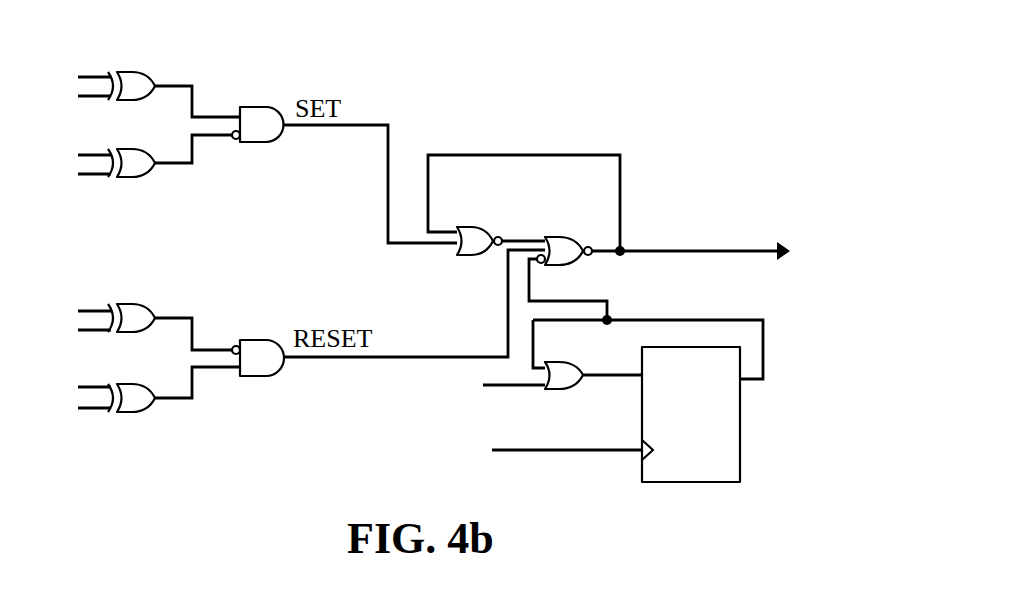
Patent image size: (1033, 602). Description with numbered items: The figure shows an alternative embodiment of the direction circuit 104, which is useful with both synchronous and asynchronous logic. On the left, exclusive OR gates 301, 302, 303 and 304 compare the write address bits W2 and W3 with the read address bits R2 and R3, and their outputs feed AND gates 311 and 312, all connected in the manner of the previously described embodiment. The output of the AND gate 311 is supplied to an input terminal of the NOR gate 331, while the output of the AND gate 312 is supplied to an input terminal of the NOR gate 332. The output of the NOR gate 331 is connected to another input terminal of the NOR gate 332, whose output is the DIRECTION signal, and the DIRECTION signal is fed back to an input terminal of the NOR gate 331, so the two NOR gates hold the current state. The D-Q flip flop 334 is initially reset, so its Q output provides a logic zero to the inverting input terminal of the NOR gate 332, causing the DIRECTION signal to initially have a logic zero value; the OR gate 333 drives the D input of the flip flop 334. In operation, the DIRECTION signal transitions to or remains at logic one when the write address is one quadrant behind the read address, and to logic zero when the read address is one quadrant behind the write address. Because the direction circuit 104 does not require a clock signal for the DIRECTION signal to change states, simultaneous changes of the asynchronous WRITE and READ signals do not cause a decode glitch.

The direction circuit 104 is at (622, 96).
The exclusive OR gate 301 is at (136, 69).
The exclusive OR gate 302 is at (131, 178).
The exclusive OR gate 303 is at (134, 302).
The exclusive OR gate 304 is at (140, 413).
The AND gate 311 is at (262, 143).
The AND gate 312 is at (261, 377).
The NOR gate 331 is at (483, 227).
The NOR gate 332 is at (569, 235).
The OR gate 333 is at (555, 391).
The D-Q flip flop 334 is at (703, 483).